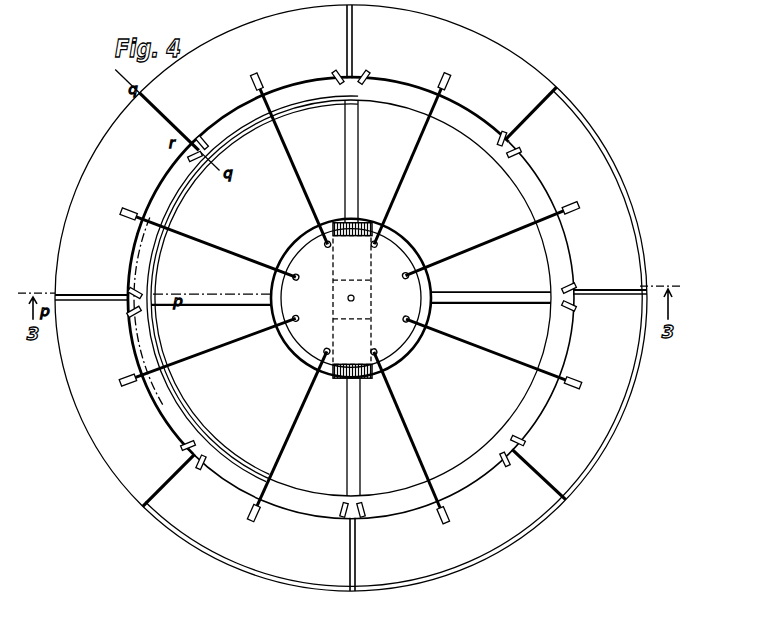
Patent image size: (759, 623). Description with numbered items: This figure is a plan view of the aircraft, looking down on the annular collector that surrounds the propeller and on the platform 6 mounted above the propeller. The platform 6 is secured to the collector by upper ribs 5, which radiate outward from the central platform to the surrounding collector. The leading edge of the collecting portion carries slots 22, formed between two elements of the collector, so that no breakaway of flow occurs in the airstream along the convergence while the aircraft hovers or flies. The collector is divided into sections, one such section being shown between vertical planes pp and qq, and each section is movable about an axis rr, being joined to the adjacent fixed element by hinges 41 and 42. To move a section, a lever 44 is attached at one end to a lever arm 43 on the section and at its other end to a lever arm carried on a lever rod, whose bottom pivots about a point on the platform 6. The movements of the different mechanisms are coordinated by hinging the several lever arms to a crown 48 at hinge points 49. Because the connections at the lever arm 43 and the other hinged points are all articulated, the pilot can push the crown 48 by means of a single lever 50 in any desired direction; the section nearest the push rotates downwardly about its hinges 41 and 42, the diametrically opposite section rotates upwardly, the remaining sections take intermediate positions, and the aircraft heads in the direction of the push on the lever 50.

The upper ribs 5 is at (211, 290).
The platform 6 is at (351, 297).
The slots 22 is at (252, 289).
The hinge 41 is at (153, 285).
The hinge 42 is at (171, 160).
The lever arm 43 is at (119, 206).
The lever 44 is at (216, 247).
The crown 48 is at (366, 297).
The hinge point 49 is at (350, 298).
The lever 50 is at (378, 302).